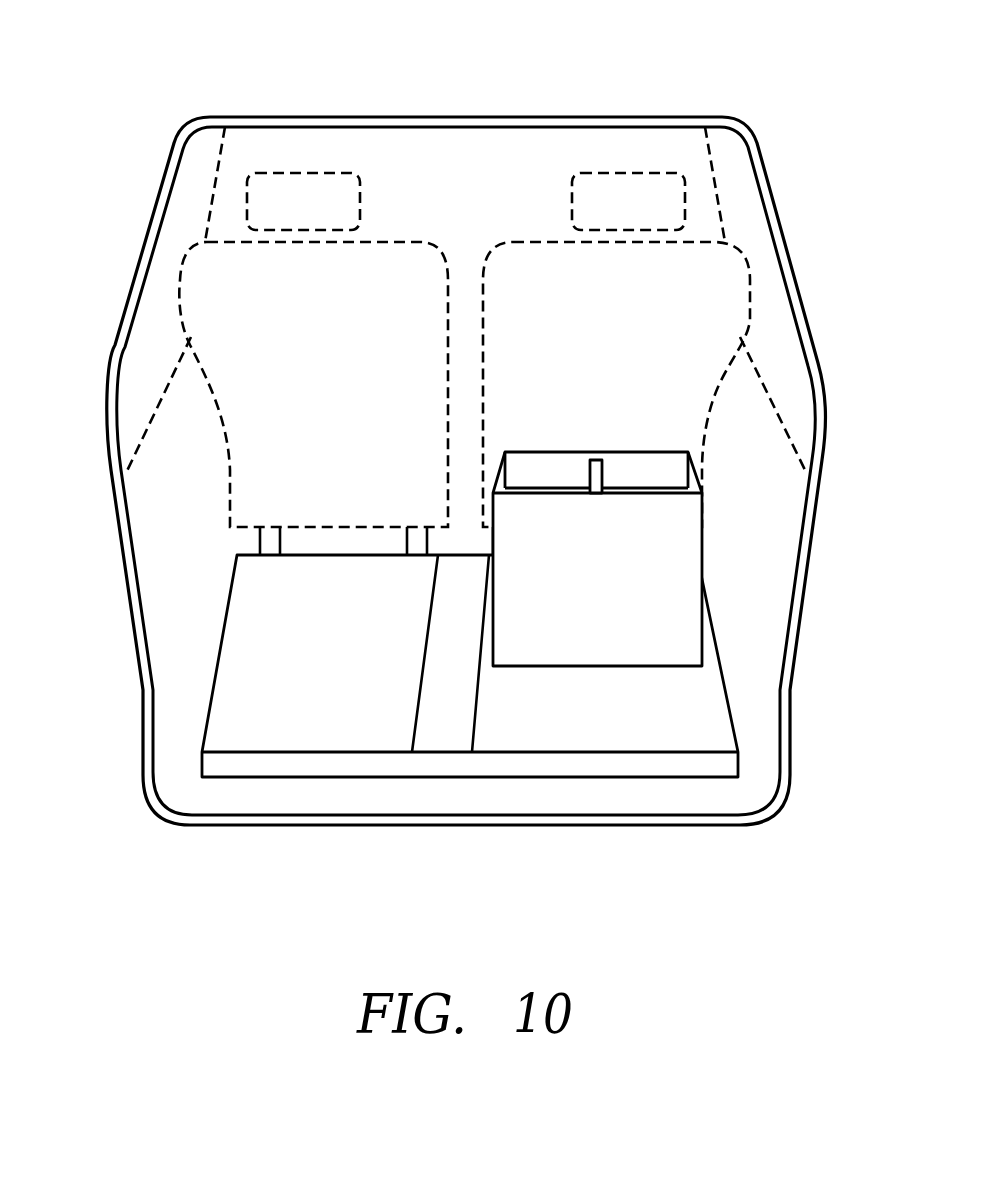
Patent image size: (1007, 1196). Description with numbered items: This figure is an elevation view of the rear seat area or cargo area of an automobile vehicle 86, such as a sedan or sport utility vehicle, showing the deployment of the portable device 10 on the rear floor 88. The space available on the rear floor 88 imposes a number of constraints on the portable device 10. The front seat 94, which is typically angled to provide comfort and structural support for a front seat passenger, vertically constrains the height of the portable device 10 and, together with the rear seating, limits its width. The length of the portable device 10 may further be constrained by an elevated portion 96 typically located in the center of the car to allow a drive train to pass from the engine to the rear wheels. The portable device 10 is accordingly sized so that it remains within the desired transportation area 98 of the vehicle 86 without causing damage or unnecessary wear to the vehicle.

The portable device 10 is at (618, 600).
The automobile vehicle 86 is at (595, 117).
The rear floor 88 is at (618, 721).
The front seat 94 is at (768, 272).
The elevated portion 96 is at (432, 740).
The transportation area 98 is at (183, 422).